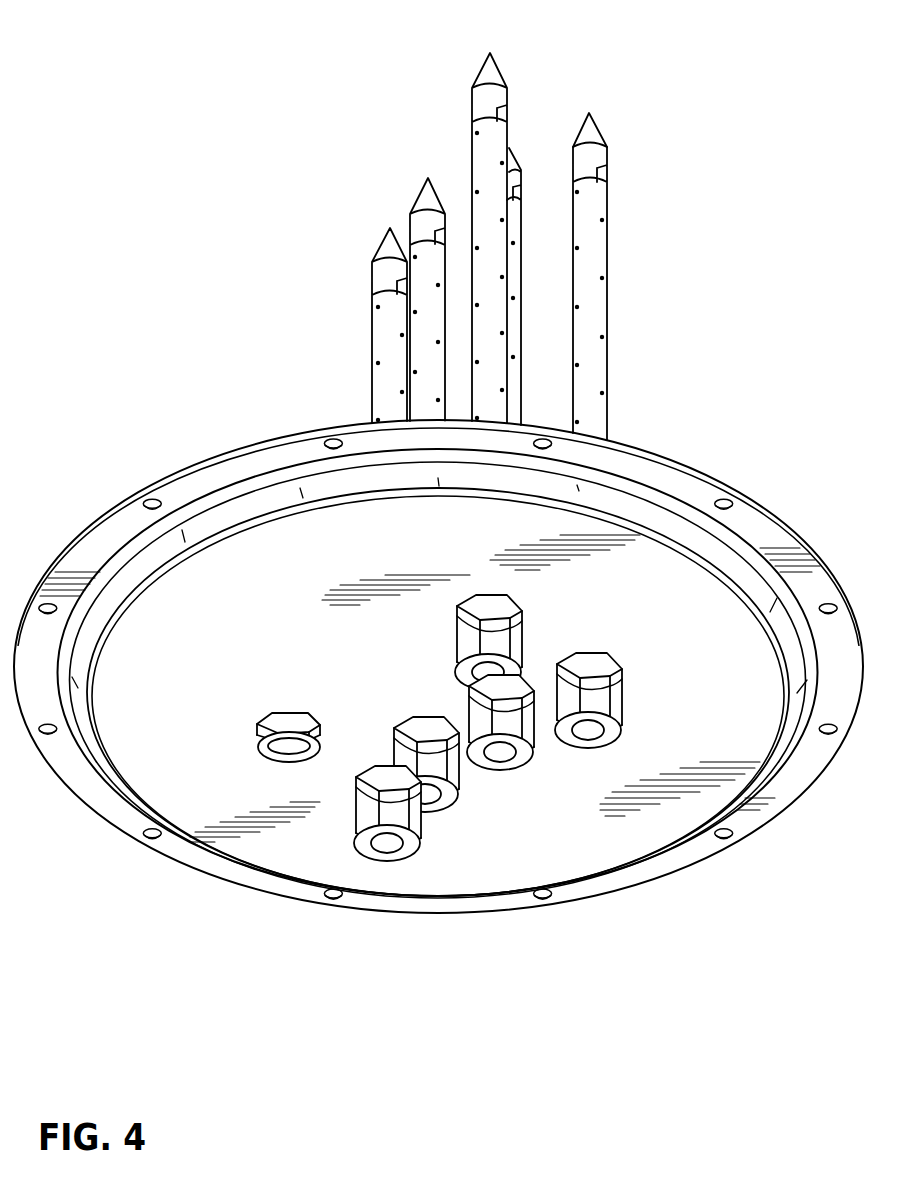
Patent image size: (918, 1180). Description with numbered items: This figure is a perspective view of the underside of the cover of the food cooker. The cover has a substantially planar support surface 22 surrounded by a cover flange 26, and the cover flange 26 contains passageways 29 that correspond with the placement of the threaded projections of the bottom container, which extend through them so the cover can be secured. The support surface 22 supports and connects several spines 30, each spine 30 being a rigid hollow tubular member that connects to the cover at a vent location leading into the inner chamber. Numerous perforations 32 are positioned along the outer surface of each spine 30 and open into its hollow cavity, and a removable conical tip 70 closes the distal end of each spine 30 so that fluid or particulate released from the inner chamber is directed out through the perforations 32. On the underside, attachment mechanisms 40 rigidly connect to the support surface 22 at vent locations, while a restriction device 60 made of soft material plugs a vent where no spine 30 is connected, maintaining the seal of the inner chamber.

The support surface 22 is at (318, 562).
The cover flange 26 is at (106, 802).
The passageways 29 is at (44, 603).
The spine 30 is at (556, 230).
The perforations 32 is at (577, 248).
The attachment mechanism 40 is at (522, 637).
The restriction device 60 is at (262, 750).
The tip 70 is at (597, 117).